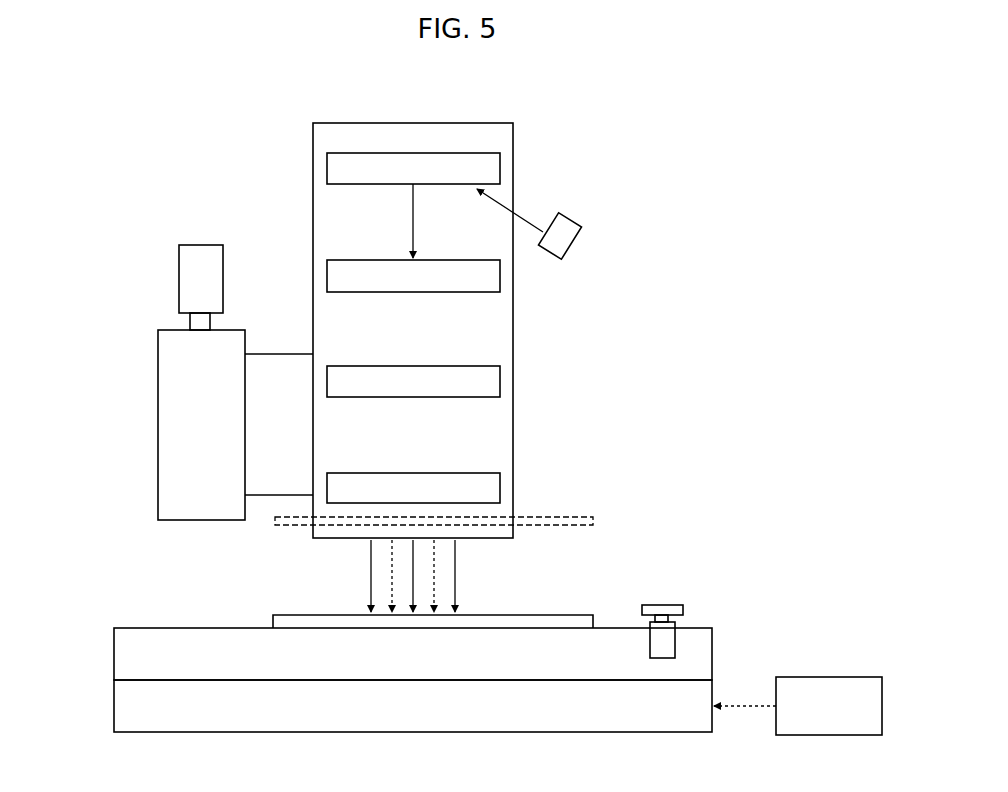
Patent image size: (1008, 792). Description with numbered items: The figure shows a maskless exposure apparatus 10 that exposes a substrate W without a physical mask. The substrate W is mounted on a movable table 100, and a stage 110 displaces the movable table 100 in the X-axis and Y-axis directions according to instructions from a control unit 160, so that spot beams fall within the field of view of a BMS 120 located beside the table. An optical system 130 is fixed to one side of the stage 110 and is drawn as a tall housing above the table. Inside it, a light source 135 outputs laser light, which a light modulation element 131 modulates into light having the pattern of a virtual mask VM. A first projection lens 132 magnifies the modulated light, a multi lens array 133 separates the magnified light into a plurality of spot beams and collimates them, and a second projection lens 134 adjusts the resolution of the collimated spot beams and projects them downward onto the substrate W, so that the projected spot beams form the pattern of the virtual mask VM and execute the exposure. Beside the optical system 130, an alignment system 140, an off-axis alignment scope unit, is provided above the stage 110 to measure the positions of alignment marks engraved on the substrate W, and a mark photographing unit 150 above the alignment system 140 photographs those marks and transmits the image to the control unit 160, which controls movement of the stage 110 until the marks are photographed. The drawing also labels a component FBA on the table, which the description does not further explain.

The maskless exposure apparatus 10 is at (638, 175).
The movable table 100 is at (135, 655).
The stage 110 is at (135, 712).
The BMS 120 is at (675, 640).
The optical system 130 is at (428, 123).
The light modulation element 131 is at (493, 167).
The first projection lens 132 is at (493, 283).
The multi lens array 133 is at (492, 380).
The second projection lens 134 is at (480, 475).
The light source 135 is at (566, 238).
The alignment system 140 is at (185, 425).
The mark photographing unit 150 is at (179, 283).
The control unit 160 is at (838, 677).
The substrate W is at (548, 620).
The virtual mask VM is at (573, 517).
The focus beam analyzer FBA is at (660, 605).